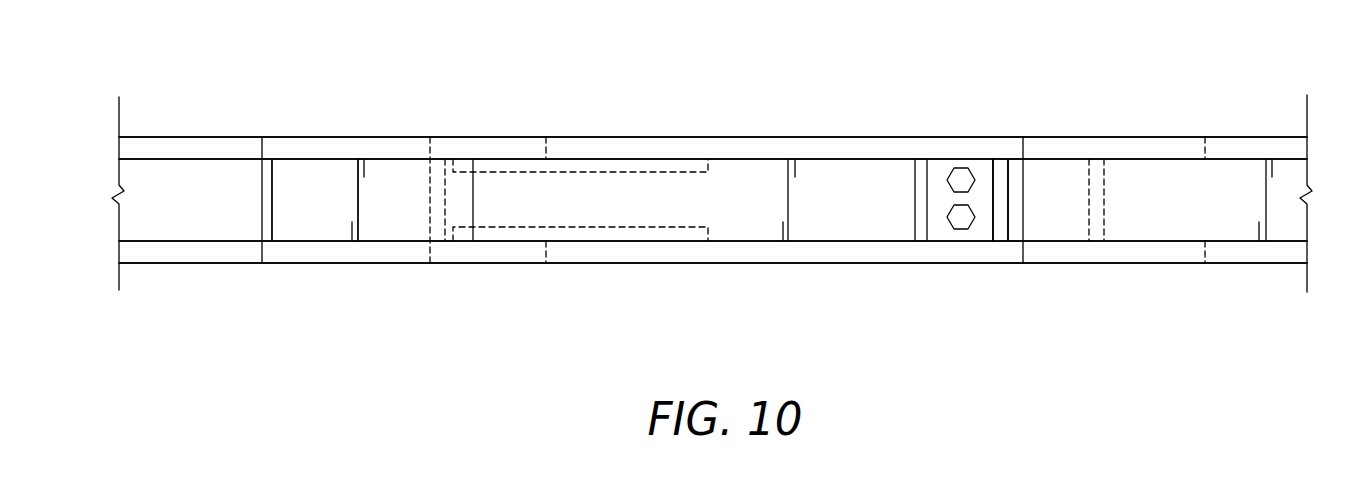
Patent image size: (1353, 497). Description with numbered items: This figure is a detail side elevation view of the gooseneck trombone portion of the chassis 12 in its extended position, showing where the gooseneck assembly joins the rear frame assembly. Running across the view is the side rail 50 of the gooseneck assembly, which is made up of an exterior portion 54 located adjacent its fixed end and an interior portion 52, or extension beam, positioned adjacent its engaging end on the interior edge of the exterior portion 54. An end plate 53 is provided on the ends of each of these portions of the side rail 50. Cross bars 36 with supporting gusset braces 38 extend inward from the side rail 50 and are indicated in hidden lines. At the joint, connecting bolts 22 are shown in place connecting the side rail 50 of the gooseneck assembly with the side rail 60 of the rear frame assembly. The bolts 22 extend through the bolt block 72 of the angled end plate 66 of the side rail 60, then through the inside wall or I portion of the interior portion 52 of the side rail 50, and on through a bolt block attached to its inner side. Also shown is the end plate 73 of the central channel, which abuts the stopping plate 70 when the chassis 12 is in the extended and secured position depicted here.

The frame assembly 12 is at (742, 117).
The connecting bolts 22 is at (961, 166).
The cross bars 36 is at (511, 215).
The gusset braces 38 is at (588, 162).
The side rail 50 is at (227, 117).
The interior portion 52 is at (830, 137).
The end plate 53 is at (387, 222).
The exterior portion 54 is at (222, 264).
The side rail 60 is at (1216, 283).
The angled end plate 66 is at (1000, 234).
The stopping plate 70 is at (1105, 180).
The bolt block 72 is at (985, 162).
The end plate 73 is at (1089, 175).